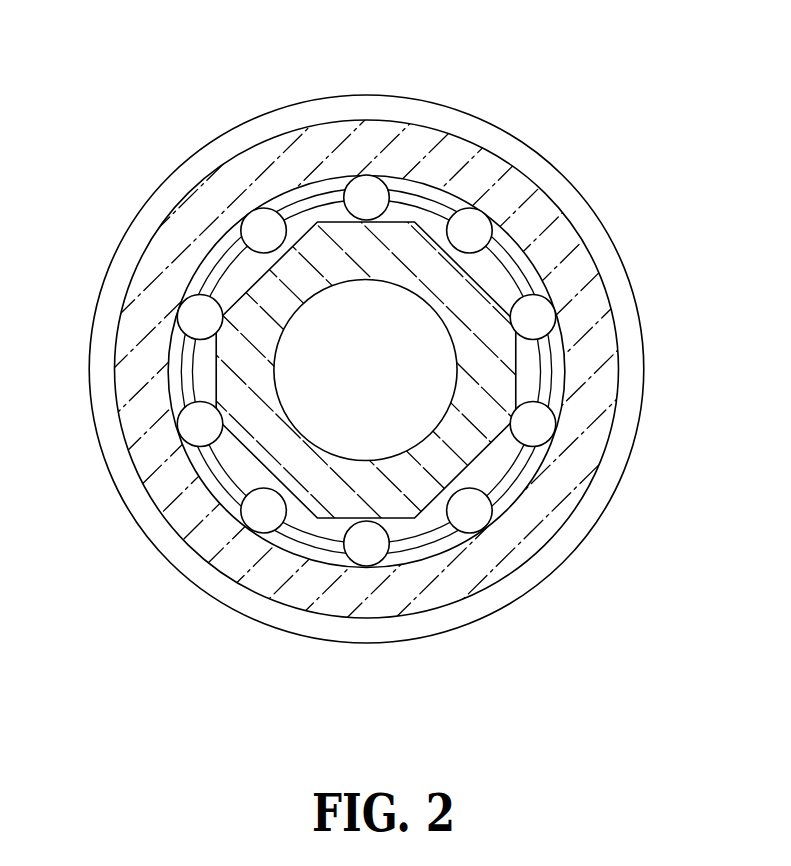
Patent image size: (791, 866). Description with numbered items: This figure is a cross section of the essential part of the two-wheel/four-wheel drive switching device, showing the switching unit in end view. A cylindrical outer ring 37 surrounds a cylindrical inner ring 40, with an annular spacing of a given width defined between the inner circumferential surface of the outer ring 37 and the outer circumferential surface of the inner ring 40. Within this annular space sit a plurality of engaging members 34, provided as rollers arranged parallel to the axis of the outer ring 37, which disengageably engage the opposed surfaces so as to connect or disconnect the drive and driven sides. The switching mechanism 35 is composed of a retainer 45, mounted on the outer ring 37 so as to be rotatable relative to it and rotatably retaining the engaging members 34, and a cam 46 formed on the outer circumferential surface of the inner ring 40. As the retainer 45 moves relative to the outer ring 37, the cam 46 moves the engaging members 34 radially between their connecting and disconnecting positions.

The engaging members 34 is at (367, 186).
The switching mechanism 35 is at (395, 399).
The outer ring 37 is at (593, 413).
The inner ring 40 is at (288, 440).
The retainer 45 is at (507, 477).
The cam 46 is at (418, 508).